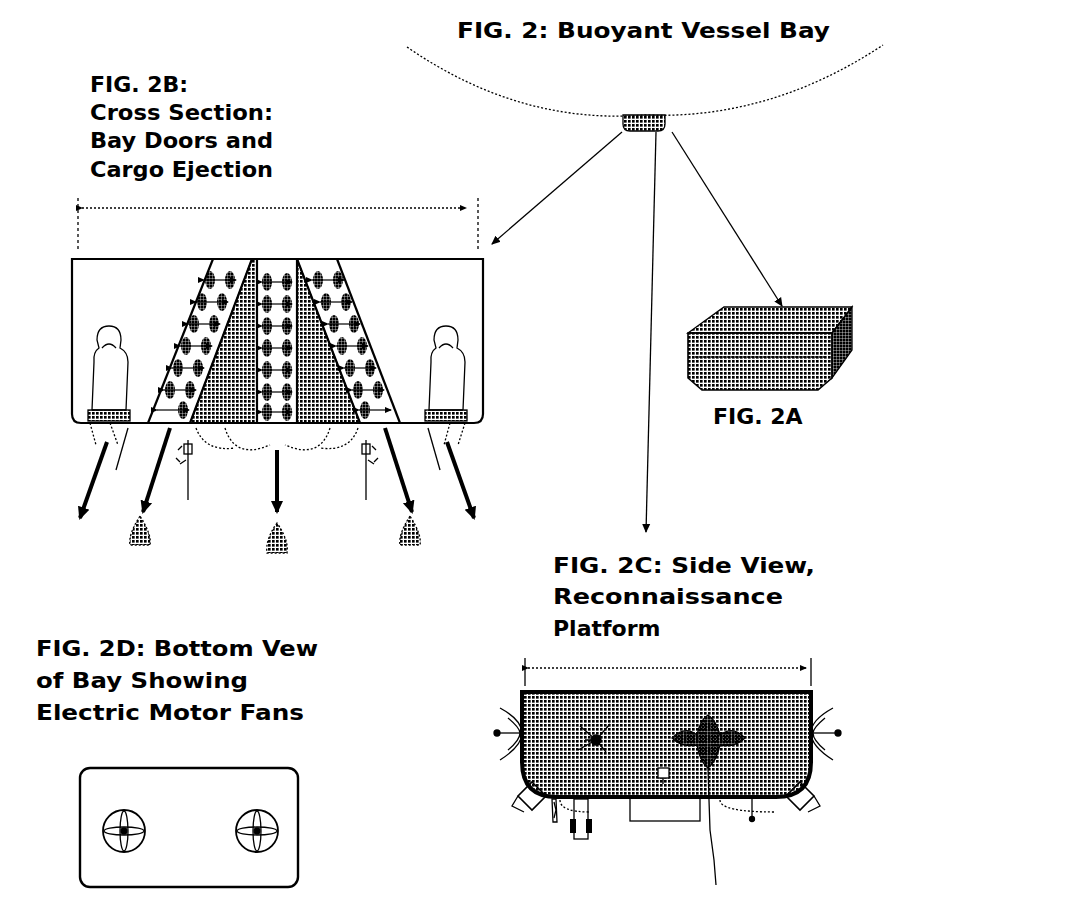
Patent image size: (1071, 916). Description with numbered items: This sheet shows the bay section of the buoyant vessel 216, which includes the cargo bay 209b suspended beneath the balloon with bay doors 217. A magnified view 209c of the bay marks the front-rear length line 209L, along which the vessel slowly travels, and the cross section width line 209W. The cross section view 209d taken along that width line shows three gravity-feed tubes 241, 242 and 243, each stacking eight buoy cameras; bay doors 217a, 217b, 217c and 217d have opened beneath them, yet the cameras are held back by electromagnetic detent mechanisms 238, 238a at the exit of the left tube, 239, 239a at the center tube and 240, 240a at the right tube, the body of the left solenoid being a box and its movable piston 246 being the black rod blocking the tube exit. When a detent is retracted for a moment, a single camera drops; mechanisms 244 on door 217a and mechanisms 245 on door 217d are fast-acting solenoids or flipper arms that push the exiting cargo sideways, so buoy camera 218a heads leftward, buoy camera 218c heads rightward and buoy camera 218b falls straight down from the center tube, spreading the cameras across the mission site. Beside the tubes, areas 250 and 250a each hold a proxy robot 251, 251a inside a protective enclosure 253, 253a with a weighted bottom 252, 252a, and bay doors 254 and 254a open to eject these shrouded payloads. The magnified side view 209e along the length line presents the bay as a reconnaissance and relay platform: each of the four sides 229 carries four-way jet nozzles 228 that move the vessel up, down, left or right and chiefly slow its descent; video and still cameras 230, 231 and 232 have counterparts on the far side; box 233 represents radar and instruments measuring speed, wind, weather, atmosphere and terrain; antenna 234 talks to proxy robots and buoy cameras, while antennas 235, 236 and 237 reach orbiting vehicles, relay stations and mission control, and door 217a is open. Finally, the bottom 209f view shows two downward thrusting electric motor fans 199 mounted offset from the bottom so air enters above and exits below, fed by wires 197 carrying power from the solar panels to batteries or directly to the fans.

In FIG. 2, the buoyant vessel 216 is at (418, 54).
In FIG. 2, the cargo bay 209b is at (646, 115).
In FIG. 2, the bay doors 217 is at (639, 133).
In FIG. 2A, the magnified view of bay 209c is at (830, 316).
In FIG. 2A, the cross section width line 209W is at (765, 325).
In FIG. 2B, the cross section width line 209W is at (278, 224).
In FIG. 2A, the length line 209L is at (760, 357).
In FIG. 2C, the length line 209L is at (668, 672).
In FIG. 2B, the cross section view of bay 209d is at (72, 268).
In FIG. 2B, the area 250 is at (110, 290).
In FIG. 2B, the area 250a is at (475, 278).
In FIG. 2B, the proxy robot 251 is at (95, 378).
In FIG. 2B, the proxy robot 251a is at (447, 366).
In FIG. 2B, the protective enclosure 253 is at (100, 336).
In FIG. 2B, the protective enclosure 253a is at (450, 336).
In FIG. 2B, the weighted bottom 252 is at (88, 413).
In FIG. 2B, the weighted bottom 252a is at (467, 413).
In FIG. 2B, the bay door 254 is at (100, 436).
In FIG. 2B, the bay door 254a is at (462, 437).
In FIG. 2B, the solenoid detent mechanism 238 is at (150, 395).
In FIG. 2C, the solenoid detent mechanism 238 is at (548, 820).
In FIG. 2B, the detent mechanism 238a is at (195, 430).
In FIG. 2B, the solenoid detent mechanism 239 is at (223, 341).
In FIG. 2B, the detent mechanism 239a is at (328, 341).
In FIG. 2B, the solenoid detent mechanism 240 is at (362, 430).
In FIG. 2B, the detent mechanism 240a is at (408, 420).
In FIG. 2B, the gravity-feed tube 241 is at (216, 256).
In FIG. 2B, the center gravity-feed tube 242 is at (276, 262).
In FIG. 2B, the gravity-feed tube 243 is at (322, 258).
In FIG. 2B, the horizontal thrust mechanism 244 is at (187, 481).
In FIG. 2B, the horizontal thrust mechanism 245 is at (365, 479).
In FIG. 2B, the solenoid piston 246 is at (150, 435).
In FIG. 2B, the bay hatch door 217a is at (255, 438).
In FIG. 2C, the bay hatch door 217a is at (662, 822).
In FIG. 2B, the bay door 217b is at (250, 452).
In FIG. 2B, the bay door 217c is at (300, 455).
In FIG. 2B, the bay hatch door 217d is at (358, 440).
In FIG. 2B, the buoy camera 218a is at (142, 546).
In FIG. 2B, the buoy camera 218b is at (266, 543).
In FIG. 2B, the buoy camera 218c is at (407, 546).
In FIG. 2C, the magnified side view of bay 209e is at (814, 700).
In FIG. 2C, the antenna 237 is at (600, 736).
In FIG. 2C, the camera 231 is at (656, 773).
In FIG. 2C, the side of bay 229 is at (778, 745).
In FIG. 2C, the four-way jet nozzle 228 is at (713, 834).
In FIG. 2C, the antenna 235 is at (475, 737).
In FIG. 2C, the antenna 236 is at (845, 740).
In FIG. 2C, the camera 230 is at (515, 807).
In FIG. 2C, the camera 232 is at (812, 808).
In FIG. 2C, the radar and measurement box 233 is at (578, 845).
In FIG. 2C, the antenna 234 is at (754, 826).
In FIG. 2D, the bay bottom 209f is at (78, 802).
In FIG. 2D, the wires 197 is at (240, 830).
In FIG. 2D, the electric motor fan 199 is at (240, 840).